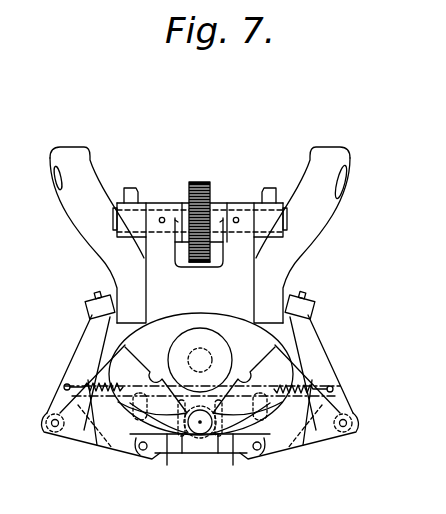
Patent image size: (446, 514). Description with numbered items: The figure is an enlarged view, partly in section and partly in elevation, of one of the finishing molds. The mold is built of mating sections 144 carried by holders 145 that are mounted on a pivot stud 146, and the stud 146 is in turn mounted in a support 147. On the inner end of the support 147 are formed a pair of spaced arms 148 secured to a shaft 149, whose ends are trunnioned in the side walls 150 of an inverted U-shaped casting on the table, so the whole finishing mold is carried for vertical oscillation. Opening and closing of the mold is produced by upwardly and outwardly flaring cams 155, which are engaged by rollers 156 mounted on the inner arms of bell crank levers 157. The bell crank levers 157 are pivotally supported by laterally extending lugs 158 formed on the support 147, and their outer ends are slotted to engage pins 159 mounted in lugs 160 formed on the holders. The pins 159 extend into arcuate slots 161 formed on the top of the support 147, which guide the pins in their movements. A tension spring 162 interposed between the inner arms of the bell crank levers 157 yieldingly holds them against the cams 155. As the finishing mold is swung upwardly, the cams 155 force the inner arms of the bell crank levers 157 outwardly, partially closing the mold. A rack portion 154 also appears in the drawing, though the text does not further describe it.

The mating sections 144 is at (134, 367).
The holders 145 is at (178, 440).
The pivot stud 146 is at (196, 435).
The support 147 is at (228, 325).
The spaced arms 148 is at (227, 203).
The shaft 149 is at (118, 217).
The side walls 150 is at (140, 197).
The rack lower end 154 is at (190, 256).
The cams 155 is at (83, 227).
The rollers 156 is at (88, 303).
The bell crank levers 157 is at (73, 358).
The lugs 158 is at (54, 407).
The pins 159 is at (147, 458).
The lugs 160 is at (158, 455).
The arcuate slots 161 is at (107, 446).
The tension spring 162 is at (338, 383).